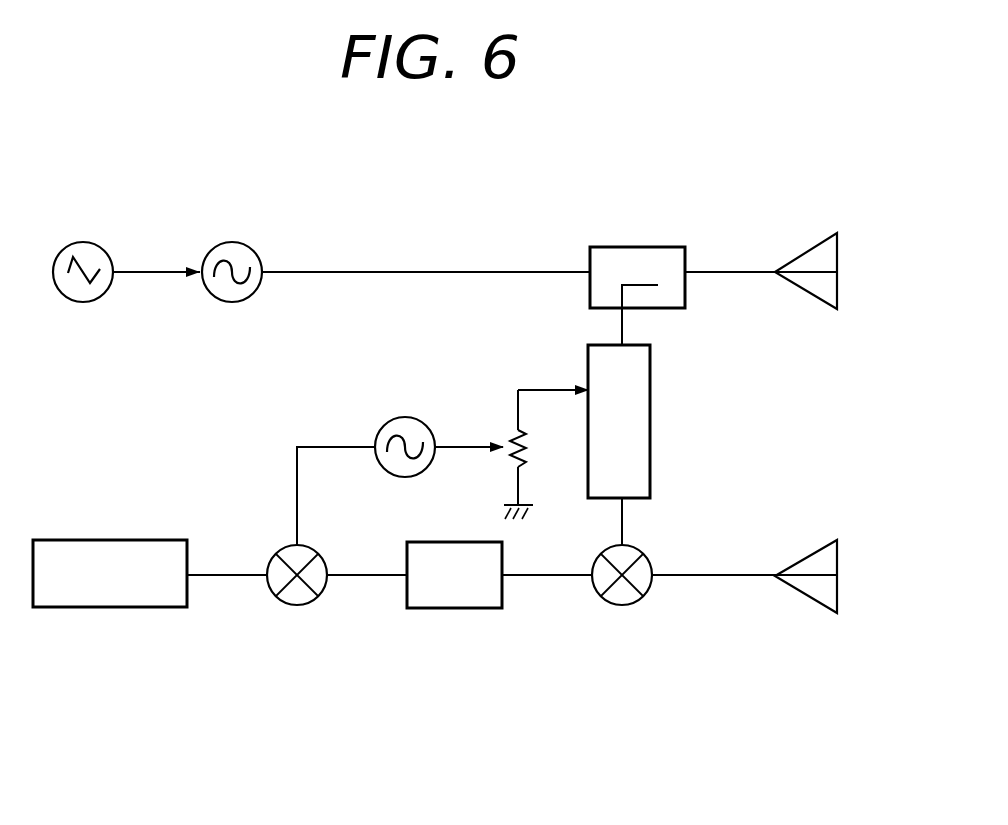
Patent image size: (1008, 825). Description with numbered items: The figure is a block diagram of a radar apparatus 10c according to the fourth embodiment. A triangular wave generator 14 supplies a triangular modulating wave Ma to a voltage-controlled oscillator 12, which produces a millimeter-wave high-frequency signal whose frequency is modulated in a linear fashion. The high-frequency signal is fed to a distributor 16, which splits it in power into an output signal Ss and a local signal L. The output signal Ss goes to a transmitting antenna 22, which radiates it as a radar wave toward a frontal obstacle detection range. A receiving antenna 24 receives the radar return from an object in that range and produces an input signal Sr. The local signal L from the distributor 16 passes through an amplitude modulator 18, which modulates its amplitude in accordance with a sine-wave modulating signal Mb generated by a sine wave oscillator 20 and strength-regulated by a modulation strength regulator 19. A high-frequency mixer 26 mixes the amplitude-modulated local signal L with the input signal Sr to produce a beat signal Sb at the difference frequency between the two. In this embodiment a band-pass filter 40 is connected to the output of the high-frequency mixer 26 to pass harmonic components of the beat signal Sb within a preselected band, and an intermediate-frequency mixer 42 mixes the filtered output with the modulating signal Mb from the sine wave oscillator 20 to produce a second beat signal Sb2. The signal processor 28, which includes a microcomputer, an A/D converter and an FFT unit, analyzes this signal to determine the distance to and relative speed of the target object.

The radar apparatus 10c is at (490, 220).
The voltage-controlled oscillator 12 is at (236, 243).
The triangular wave generator 14 is at (85, 243).
The distributor 16 is at (641, 247).
The amplitude modulator 18 is at (651, 430).
The modulation strength regulator 19 is at (522, 466).
The sine wave oscillator 20 is at (406, 418).
The transmitting antenna 22 is at (808, 251).
The receiving antenna 24 is at (806, 549).
The high-frequency mixer 26 is at (632, 603).
The signal processor 28 is at (106, 540).
The band-pass filter 40 is at (455, 609).
The intermediate-frequency mixer 42 is at (316, 552).
The modulating wave Ma is at (147, 275).
The modulating signal Mb is at (470, 446).
The output signal Ss is at (736, 275).
The input signal Sr is at (745, 578).
The beat signal Sb is at (550, 578).
The second beat signal Sb2 is at (225, 578).
The local signal L is at (624, 522).